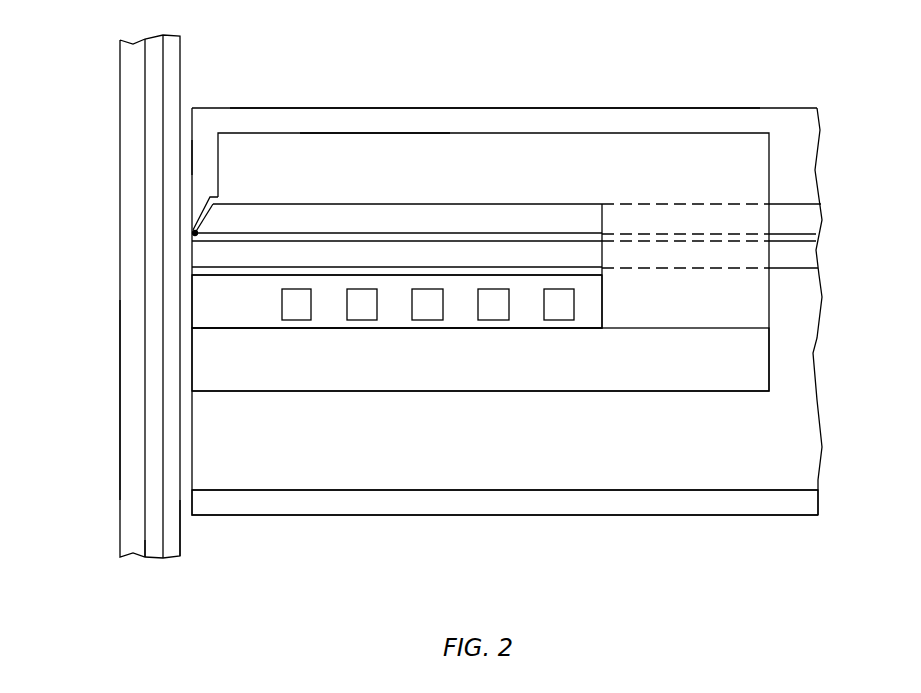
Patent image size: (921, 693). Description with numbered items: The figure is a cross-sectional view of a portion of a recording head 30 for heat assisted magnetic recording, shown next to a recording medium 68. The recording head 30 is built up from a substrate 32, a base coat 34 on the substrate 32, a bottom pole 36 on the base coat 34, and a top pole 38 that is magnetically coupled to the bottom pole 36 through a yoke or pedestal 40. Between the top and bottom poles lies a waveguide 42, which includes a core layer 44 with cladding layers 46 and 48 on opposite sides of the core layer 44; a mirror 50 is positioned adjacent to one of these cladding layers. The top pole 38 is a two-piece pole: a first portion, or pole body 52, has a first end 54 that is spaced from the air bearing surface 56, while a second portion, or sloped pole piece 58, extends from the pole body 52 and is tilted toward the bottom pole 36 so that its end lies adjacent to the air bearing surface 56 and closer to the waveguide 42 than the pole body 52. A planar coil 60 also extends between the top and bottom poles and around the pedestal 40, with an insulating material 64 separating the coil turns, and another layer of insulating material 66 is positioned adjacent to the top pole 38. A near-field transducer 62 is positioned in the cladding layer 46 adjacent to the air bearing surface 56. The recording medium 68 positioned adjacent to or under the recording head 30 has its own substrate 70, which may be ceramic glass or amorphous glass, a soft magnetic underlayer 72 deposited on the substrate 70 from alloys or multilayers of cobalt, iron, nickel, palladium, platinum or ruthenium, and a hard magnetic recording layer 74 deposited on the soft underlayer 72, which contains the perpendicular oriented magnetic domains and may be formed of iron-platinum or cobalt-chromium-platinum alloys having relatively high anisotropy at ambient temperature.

The recording head 30 is at (766, 82).
The substrate 32 is at (698, 505).
The base coat 34 is at (806, 473).
The bottom pole 36 is at (458, 375).
The top pole 38 is at (447, 147).
The yoke or pedestal 40 is at (757, 331).
The waveguide 42 is at (516, 200).
The core layer 44 is at (387, 240).
The cladding layer 46 is at (571, 216).
The cladding layer 48 is at (592, 255).
The mirror 50 is at (587, 276).
The pole body 52 is at (347, 142).
The first end 54 is at (216, 146).
The air bearing surface 56 is at (192, 157).
The sloped pole piece 58 is at (198, 214).
The planar coil 60 is at (425, 310).
The near-field transducer 62 is at (195, 233).
The insulating material 64 is at (525, 310).
The layer of insulating material 66 is at (275, 123).
The recording medium 68 is at (92, 76).
The substrate 70 is at (127, 487).
The soft magnetic underlayer 72 is at (153, 552).
The hard magnetic recording layer 74 is at (172, 542).